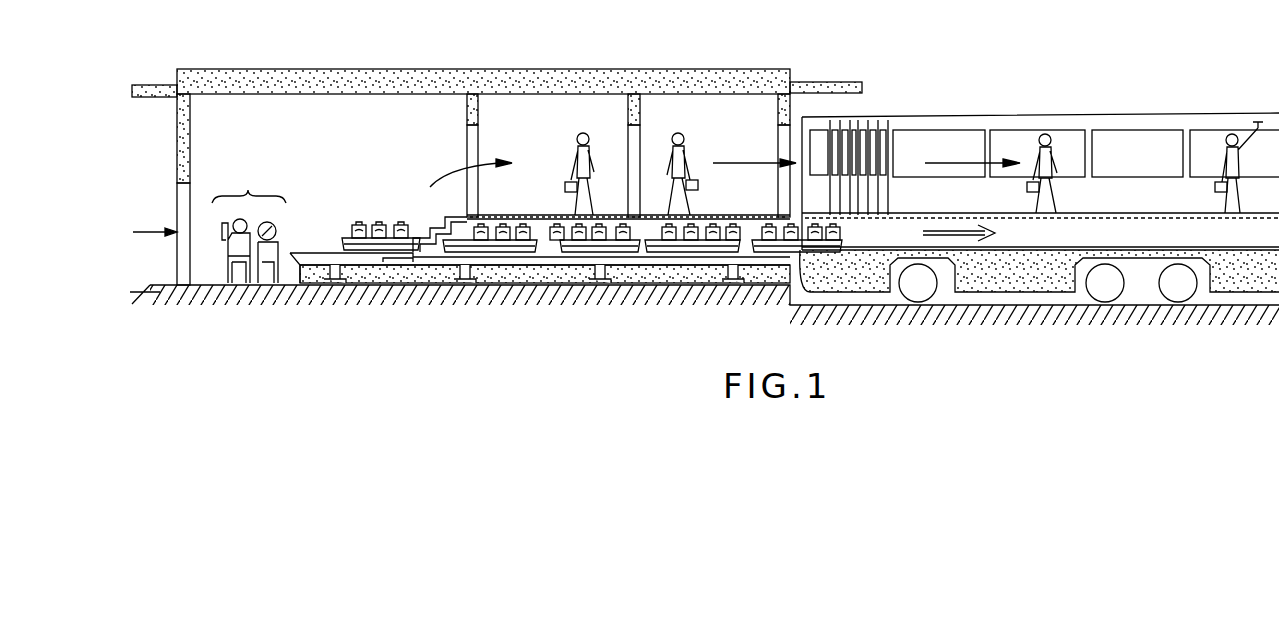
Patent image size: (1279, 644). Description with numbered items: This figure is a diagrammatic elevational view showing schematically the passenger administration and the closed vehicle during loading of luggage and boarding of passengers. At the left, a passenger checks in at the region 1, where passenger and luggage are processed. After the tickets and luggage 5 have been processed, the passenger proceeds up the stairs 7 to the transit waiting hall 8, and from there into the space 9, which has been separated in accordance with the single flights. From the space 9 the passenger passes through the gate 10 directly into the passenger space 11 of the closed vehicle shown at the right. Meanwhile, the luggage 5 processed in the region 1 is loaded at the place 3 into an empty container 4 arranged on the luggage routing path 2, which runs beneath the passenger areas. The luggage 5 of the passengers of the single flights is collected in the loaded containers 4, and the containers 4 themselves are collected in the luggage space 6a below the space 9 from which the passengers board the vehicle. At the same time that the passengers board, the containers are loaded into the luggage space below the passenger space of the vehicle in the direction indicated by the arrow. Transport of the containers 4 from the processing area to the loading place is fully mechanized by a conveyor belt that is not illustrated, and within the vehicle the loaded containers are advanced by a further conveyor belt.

The check-in region 1 is at (248, 183).
The luggage routing path 2 is at (305, 290).
The loading place 3 is at (362, 190).
The container 4 is at (494, 262).
The luggage 5 is at (572, 262).
The luggage space 6a is at (656, 222).
The stairs 7 is at (445, 223).
The transit waiting hall 8 is at (607, 115).
The space 9 is at (730, 120).
The gate 10 is at (803, 120).
The passenger space 11 is at (1140, 143).